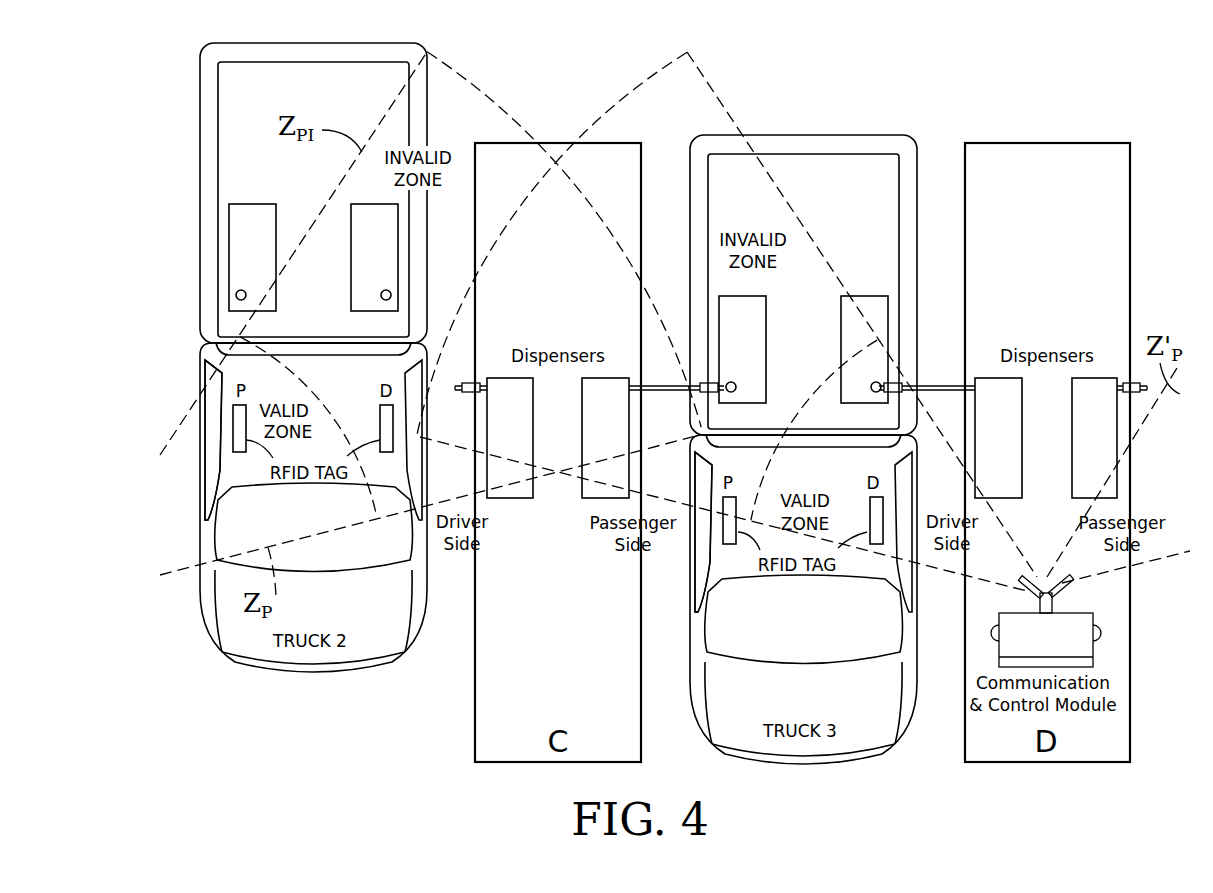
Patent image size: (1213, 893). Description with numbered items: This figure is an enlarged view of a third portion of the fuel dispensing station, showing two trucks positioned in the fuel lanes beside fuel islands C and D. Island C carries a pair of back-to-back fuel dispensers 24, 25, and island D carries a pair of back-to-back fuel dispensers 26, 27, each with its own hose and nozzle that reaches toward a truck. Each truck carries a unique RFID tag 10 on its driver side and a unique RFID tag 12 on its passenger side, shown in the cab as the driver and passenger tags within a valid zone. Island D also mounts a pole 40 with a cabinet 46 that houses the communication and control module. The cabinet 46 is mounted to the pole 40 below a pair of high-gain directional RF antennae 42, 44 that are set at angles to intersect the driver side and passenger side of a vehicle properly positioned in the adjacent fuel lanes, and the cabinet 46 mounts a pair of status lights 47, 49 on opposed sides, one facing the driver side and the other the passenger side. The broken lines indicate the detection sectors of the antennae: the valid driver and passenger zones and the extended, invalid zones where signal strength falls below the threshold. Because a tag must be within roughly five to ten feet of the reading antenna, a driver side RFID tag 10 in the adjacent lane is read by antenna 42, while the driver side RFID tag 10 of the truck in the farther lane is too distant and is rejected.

The RFID tag 10 is at (416, 420).
The RFID tag 12 is at (212, 452).
The fuel dispenser 24 is at (505, 388).
The fuel dispenser 25 is at (608, 388).
The fuel dispenser 26 is at (995, 388).
The fuel dispenser 27 is at (1100, 388).
The pole 40 is at (1052, 610).
The RF antenna 42 is at (1026, 585).
The RF antenna 44 is at (1067, 577).
The cabinet 46 is at (1030, 649).
The status light 47 is at (991, 633).
The status light 49 is at (1101, 633).